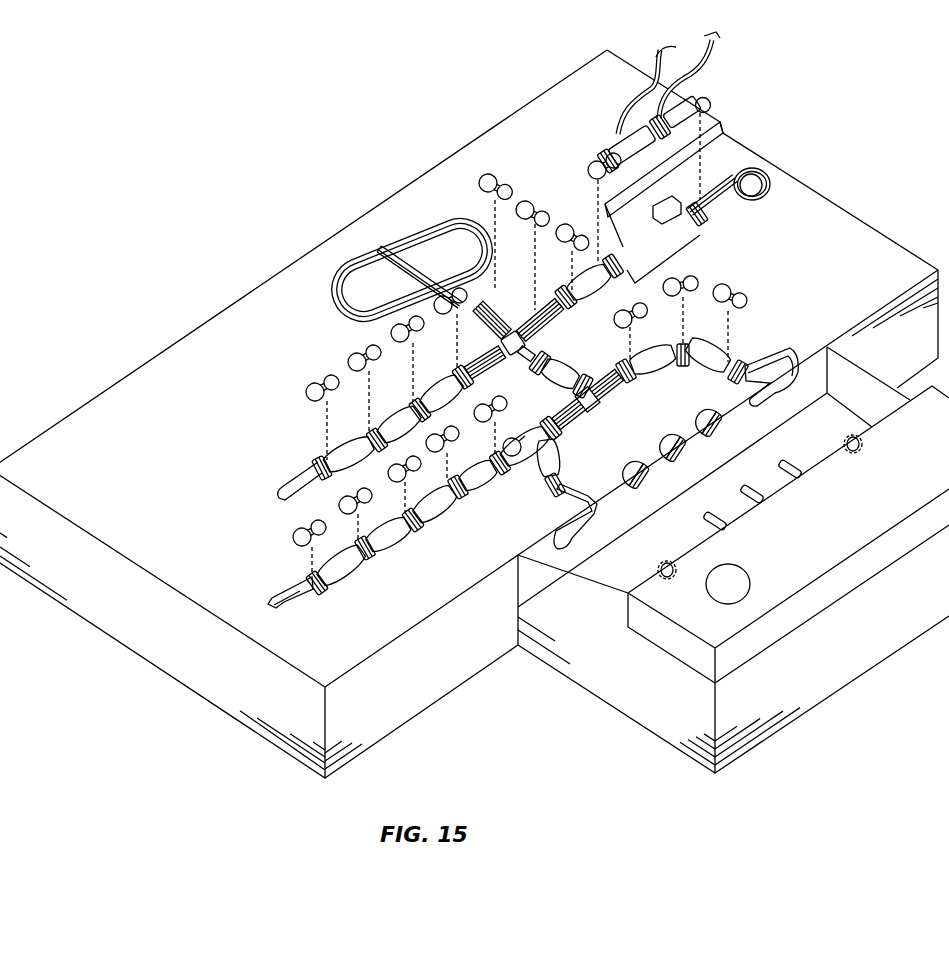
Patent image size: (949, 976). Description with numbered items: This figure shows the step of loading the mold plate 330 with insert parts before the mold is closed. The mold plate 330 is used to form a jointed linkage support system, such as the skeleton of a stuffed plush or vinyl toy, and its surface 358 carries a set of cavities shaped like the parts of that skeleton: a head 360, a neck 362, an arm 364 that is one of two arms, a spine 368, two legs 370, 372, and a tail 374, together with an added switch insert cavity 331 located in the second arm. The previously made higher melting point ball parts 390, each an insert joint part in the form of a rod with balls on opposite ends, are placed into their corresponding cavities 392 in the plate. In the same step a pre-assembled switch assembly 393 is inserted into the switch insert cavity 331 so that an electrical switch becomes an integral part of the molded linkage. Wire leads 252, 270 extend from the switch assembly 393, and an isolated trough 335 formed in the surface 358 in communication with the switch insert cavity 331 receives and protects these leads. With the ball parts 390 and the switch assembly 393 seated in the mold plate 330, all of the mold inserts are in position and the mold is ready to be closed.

The mold plate 330 is at (368, 148).
The surface 358 is at (257, 297).
The isolated trough 335 is at (728, 149).
The switch insert cavity 331 is at (683, 243).
The electrical lead 270 is at (711, 106).
The head cavity 360 is at (738, 207).
The lead 252 is at (650, 103).
The pre-assembled switch assembly 393 is at (616, 142).
The higher melting point ball parts 390 is at (527, 203).
The arm cavity 364 is at (294, 478).
The cavities 392 is at (393, 410).
The neck cavity 362 is at (452, 322).
The spine cavity 368 is at (544, 372).
The tail cavity 374 is at (400, 548).
The leg cavity 372 is at (657, 386).
The leg cavity 370 is at (530, 478).